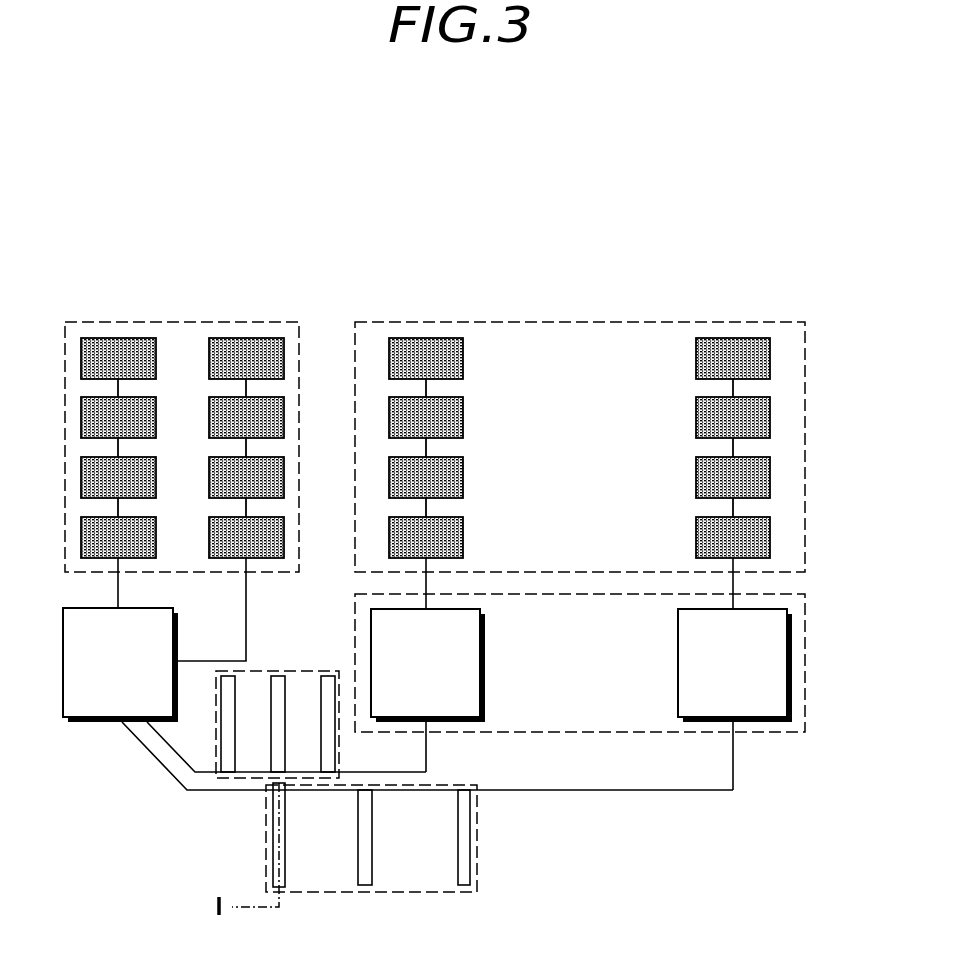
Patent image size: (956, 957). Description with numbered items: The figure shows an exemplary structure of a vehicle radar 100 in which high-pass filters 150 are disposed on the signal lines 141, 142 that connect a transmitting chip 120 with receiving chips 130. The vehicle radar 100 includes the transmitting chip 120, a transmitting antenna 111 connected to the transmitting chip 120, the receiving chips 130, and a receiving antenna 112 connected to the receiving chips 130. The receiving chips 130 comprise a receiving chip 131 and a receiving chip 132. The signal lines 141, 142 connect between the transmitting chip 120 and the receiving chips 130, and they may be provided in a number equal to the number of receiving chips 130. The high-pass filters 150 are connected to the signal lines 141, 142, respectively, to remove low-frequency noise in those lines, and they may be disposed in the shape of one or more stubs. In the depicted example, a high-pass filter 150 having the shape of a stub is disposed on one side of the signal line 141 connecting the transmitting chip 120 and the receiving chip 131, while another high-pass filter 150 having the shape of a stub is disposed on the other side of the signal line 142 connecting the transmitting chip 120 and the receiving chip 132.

The vehicle radar 100 is at (100, 189).
The transmitting antenna 111 is at (270, 320).
The receiving antenna 112 is at (775, 320).
The transmitting chip 120 is at (137, 677).
The receiving chips 130 is at (782, 735).
The receiving chip 131 is at (444, 677).
The receiving chip 132 is at (752, 677).
The signal line 141 is at (178, 753).
The signal line 142 is at (552, 792).
The high-pass filter 150 is at (298, 670).